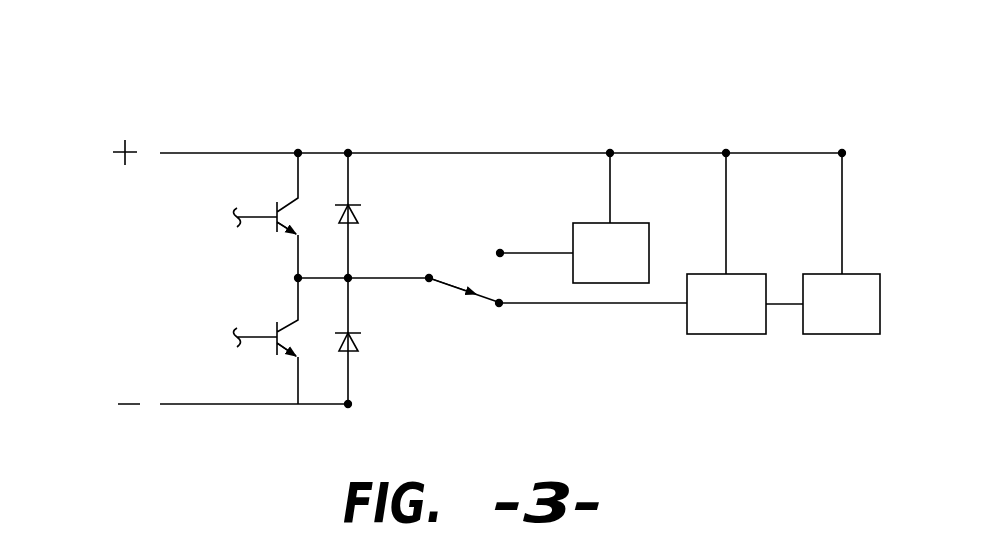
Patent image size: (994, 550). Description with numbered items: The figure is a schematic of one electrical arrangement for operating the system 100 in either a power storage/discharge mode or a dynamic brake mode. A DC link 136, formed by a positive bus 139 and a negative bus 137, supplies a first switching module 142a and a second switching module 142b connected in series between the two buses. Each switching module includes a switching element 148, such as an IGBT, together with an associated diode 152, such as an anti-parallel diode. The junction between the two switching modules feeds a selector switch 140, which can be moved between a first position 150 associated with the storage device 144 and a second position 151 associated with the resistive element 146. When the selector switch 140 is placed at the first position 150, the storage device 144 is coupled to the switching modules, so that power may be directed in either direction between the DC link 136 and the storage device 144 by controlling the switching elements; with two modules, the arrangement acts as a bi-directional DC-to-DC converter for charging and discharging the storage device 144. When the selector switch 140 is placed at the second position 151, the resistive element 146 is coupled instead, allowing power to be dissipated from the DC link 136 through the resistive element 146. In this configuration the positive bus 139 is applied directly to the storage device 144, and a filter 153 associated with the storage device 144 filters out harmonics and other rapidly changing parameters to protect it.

The system 100 is at (274, 77).
The positive bus 139 is at (247, 152).
The negative bus 137 is at (242, 405).
The DC link 136 is at (116, 268).
The first switching module 142a is at (203, 206).
The second switching module 142b is at (198, 350).
The switching element 148 is at (277, 211).
The diode 152 is at (358, 222).
The selector switch 140 is at (448, 286).
The first position 150 is at (500, 307).
The second position 151 is at (500, 248).
The resistive element 146 is at (589, 267).
The filter 153 is at (704, 318).
The storage device 144 is at (820, 318).